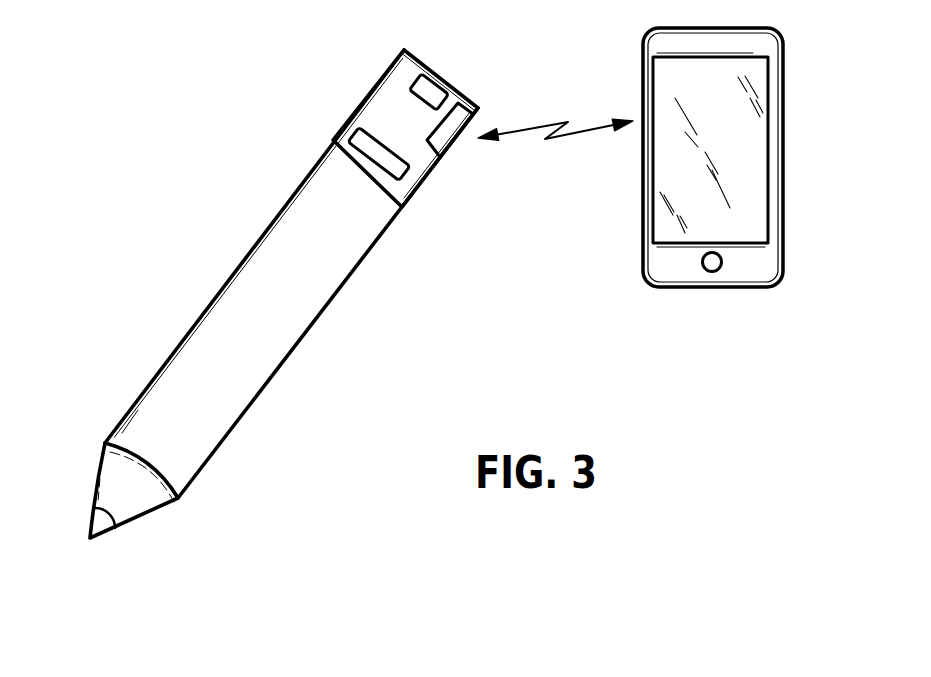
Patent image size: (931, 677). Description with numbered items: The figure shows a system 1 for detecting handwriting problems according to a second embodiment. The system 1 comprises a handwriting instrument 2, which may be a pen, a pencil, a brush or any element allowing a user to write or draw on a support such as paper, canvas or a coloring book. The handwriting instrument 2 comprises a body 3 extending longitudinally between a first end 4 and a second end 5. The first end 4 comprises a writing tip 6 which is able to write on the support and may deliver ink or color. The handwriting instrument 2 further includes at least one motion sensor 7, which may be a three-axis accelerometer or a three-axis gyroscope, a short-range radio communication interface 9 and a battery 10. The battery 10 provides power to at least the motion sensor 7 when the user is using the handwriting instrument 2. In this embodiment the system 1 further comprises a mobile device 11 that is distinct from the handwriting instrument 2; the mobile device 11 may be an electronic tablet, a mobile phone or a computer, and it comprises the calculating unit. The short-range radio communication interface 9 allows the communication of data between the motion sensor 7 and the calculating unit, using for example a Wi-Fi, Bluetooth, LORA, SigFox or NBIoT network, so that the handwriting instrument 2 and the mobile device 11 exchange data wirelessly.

The system 1 is at (296, 313).
The handwriting instrument 2 is at (127, 465).
The body 3 is at (192, 387).
The first end 4 is at (133, 500).
The second end 5 is at (383, 77).
The writing tip 6 is at (102, 527).
The motion sensor 7 is at (427, 92).
The short-range radio communication interface 9 is at (459, 116).
The battery 10 is at (375, 147).
The mobile device 11 is at (782, 68).